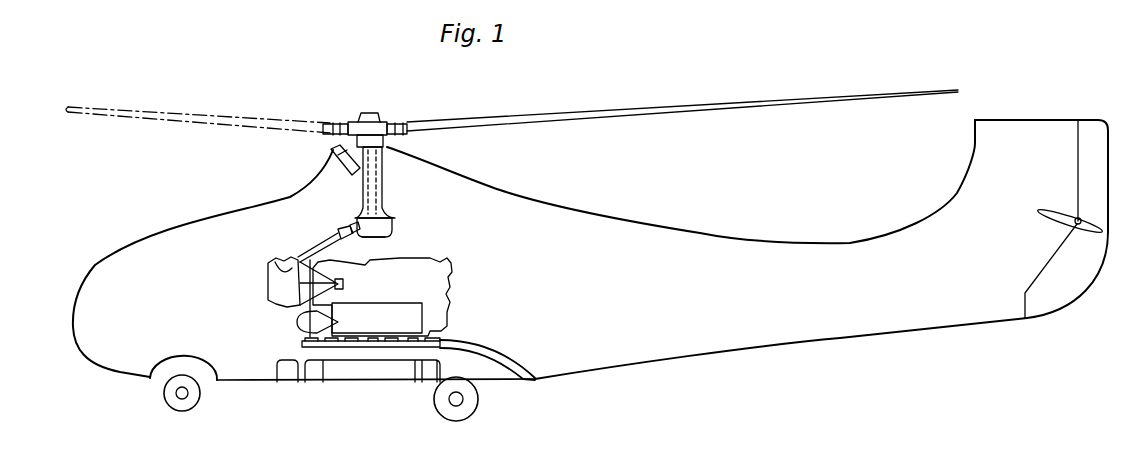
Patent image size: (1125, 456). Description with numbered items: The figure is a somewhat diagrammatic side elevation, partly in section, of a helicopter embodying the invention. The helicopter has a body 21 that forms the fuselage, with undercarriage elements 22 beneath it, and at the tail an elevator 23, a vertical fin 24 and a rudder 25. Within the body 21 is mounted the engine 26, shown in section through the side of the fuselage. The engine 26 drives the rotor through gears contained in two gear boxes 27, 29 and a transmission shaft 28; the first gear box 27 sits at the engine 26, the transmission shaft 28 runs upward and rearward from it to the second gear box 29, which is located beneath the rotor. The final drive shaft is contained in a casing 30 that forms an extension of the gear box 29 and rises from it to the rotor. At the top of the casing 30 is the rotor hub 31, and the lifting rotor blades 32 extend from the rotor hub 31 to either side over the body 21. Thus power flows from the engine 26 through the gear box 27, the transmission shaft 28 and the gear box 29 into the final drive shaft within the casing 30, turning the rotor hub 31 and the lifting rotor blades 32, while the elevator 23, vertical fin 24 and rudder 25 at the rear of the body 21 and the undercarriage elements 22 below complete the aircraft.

The body 21 is at (265, 373).
The undercarriage elements 22 is at (186, 413).
The elevator 23 is at (1063, 213).
The vertical fin 24 is at (983, 183).
The rudder 25 is at (1096, 140).
The engine 26 is at (383, 322).
The gear box 27 is at (290, 285).
The transmission shaft 28 is at (326, 240).
The gear box 29 is at (393, 226).
The casing 30 is at (383, 190).
The rotor hub 31 is at (388, 122).
The lifting rotor blades 32 is at (155, 113).